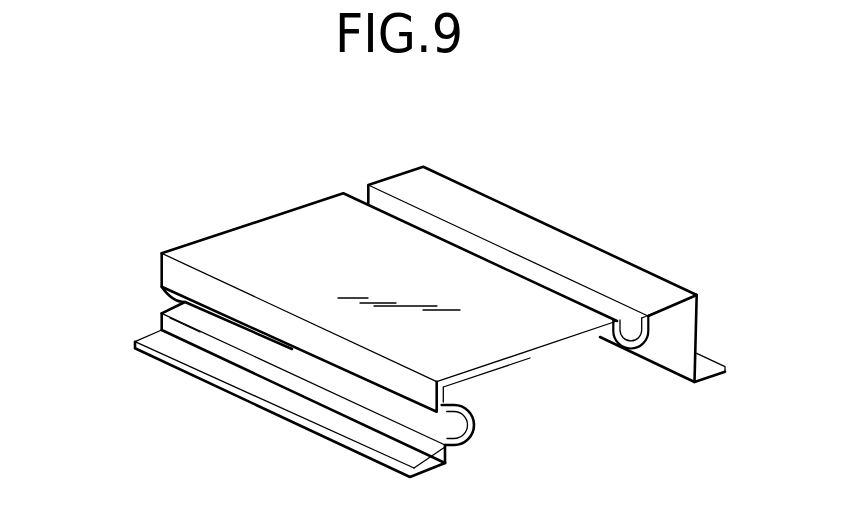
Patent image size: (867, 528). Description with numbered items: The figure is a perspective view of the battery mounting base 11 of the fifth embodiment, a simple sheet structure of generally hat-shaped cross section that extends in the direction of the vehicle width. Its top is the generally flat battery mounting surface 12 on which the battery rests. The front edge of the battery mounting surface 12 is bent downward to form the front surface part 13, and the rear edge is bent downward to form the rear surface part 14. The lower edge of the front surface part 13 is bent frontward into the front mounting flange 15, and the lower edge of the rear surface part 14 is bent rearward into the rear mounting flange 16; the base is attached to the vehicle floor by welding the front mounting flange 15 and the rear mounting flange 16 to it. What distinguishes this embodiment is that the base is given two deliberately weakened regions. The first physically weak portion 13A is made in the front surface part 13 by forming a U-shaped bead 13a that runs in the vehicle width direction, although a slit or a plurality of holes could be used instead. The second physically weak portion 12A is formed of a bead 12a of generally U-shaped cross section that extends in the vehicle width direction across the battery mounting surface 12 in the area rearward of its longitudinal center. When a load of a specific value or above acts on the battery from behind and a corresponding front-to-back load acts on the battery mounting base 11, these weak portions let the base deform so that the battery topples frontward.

The battery mounting base 11 is at (563, 156).
The battery mounting surface 12 is at (318, 215).
The bead 12a is at (468, 243).
The second physically weak portion 12A is at (626, 376).
The front surface part 13 is at (167, 273).
The U-shaped bead 13a is at (270, 376).
The first physically weak portion 13A is at (189, 353).
The rear surface part 14 is at (673, 330).
The front mounting flange 15 is at (347, 430).
The rear mounting flange 16 is at (713, 357).